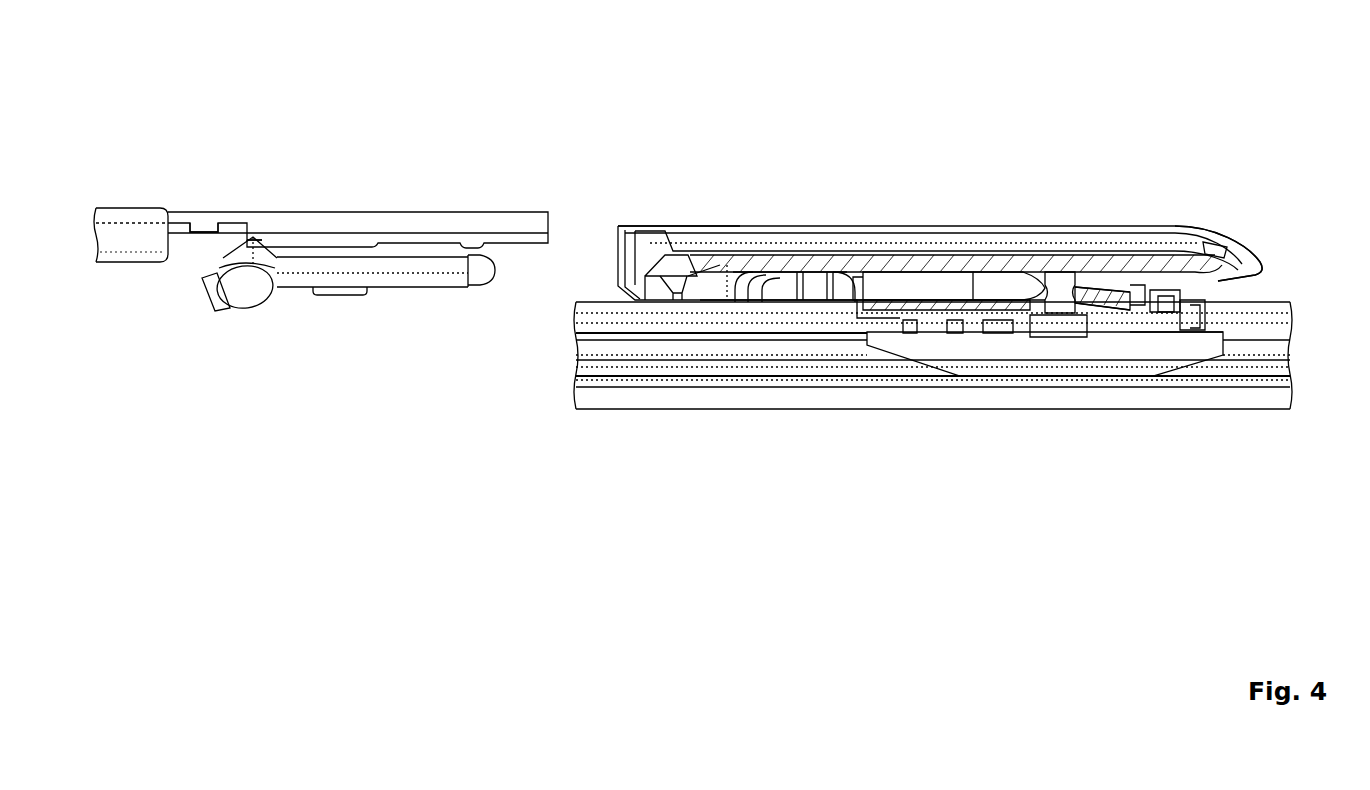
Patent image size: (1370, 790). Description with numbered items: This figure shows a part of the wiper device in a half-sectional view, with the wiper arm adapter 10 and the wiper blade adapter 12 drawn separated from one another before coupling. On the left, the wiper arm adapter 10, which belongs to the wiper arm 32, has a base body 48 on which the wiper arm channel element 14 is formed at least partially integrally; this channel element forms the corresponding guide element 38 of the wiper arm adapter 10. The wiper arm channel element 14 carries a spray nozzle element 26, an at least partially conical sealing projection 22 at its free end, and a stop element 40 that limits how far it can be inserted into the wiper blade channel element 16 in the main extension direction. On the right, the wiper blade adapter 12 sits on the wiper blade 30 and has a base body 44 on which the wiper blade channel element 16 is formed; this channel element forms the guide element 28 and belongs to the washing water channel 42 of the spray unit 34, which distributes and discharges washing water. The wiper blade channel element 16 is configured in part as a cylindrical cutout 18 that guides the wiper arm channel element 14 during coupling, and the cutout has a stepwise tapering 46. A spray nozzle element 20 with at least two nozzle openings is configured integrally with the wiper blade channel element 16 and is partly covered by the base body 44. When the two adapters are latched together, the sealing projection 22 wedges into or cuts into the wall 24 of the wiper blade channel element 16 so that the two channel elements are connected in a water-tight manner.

The wiper arm adapter 10 is at (406, 200).
The wiper blade adapter 12 is at (1216, 225).
The wiper arm channel element 14 is at (372, 226).
The wiper blade channel element 16 is at (1058, 241).
The cylindrical cutout 18 is at (915, 280).
The spray nozzle element 20 is at (1083, 300).
The sealing projection 22 is at (478, 290).
The wall 24 is at (968, 300).
The spray nozzle element 26 is at (218, 320).
The guide element 28 is at (1018, 270).
The wiper blade 30 is at (1274, 432).
The wiper arm 32 is at (222, 200).
The spray unit 34 is at (980, 128).
The corresponding guide element 38 is at (328, 258).
The stop element 40 is at (340, 296).
The washing water channel 42 is at (787, 335).
The base body 44 is at (858, 225).
The tapering 46 is at (975, 325).
The base body 48 is at (276, 215).